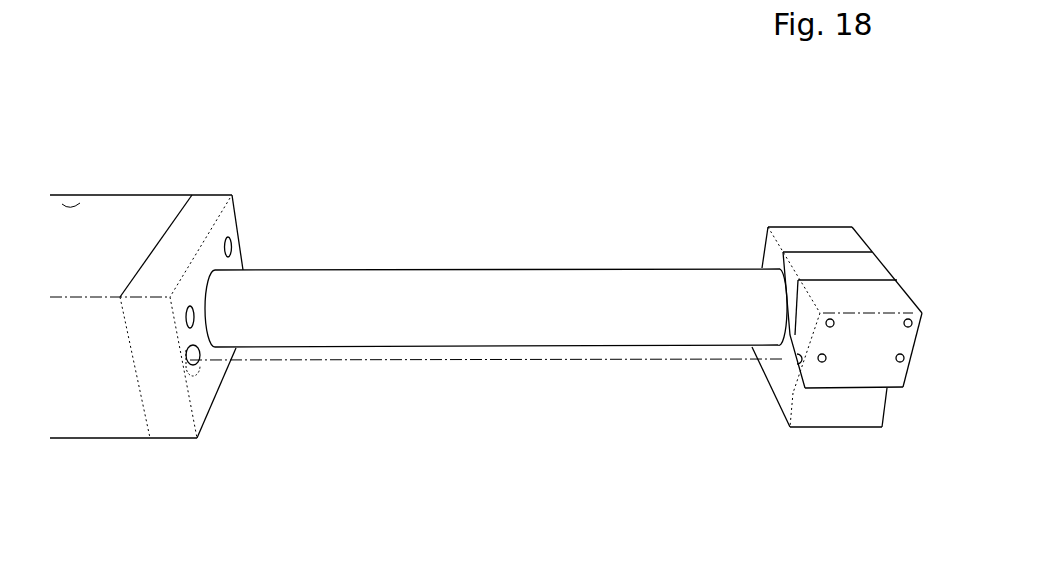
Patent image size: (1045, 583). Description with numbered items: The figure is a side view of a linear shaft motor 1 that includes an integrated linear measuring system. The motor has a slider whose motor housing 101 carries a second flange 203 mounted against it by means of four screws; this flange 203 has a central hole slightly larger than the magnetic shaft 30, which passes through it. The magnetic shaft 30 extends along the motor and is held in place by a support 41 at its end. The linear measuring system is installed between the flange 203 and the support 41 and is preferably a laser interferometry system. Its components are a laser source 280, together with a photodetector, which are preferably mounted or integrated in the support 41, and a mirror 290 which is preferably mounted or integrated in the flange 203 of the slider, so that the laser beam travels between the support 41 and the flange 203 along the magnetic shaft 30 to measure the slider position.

The assembly 1 is at (324, 100).
The magnetic shaft 30 is at (353, 310).
The support 41 is at (773, 372).
The motor housing 101 is at (80, 383).
The second flange 203 is at (160, 405).
The laser source 280 is at (808, 363).
The mirror 290 is at (193, 367).